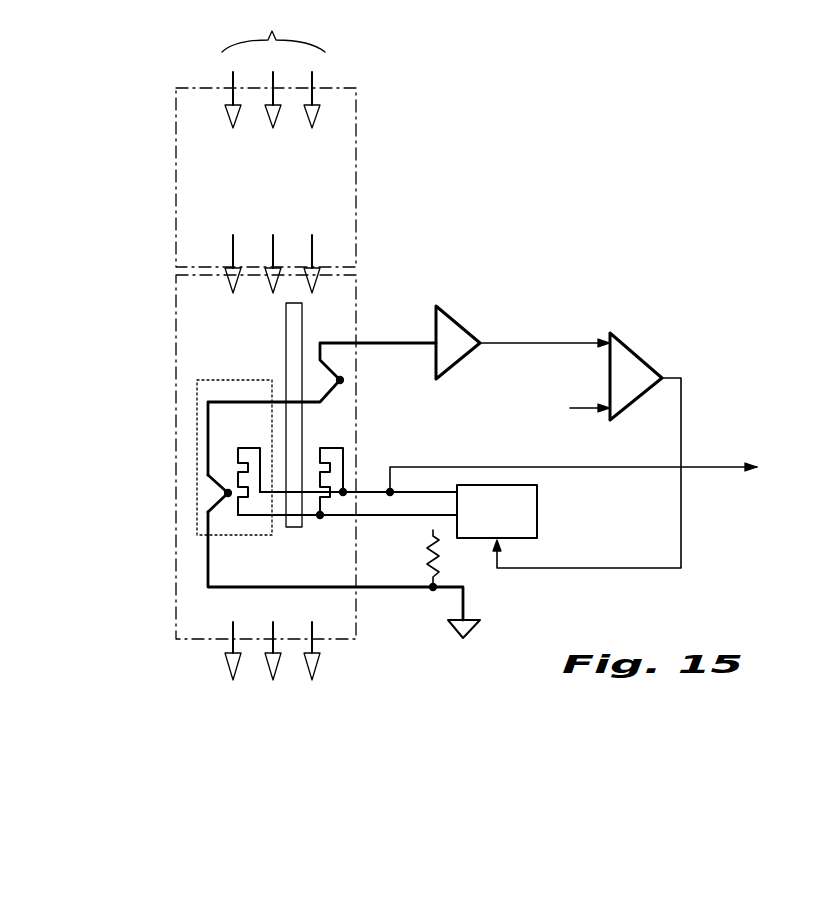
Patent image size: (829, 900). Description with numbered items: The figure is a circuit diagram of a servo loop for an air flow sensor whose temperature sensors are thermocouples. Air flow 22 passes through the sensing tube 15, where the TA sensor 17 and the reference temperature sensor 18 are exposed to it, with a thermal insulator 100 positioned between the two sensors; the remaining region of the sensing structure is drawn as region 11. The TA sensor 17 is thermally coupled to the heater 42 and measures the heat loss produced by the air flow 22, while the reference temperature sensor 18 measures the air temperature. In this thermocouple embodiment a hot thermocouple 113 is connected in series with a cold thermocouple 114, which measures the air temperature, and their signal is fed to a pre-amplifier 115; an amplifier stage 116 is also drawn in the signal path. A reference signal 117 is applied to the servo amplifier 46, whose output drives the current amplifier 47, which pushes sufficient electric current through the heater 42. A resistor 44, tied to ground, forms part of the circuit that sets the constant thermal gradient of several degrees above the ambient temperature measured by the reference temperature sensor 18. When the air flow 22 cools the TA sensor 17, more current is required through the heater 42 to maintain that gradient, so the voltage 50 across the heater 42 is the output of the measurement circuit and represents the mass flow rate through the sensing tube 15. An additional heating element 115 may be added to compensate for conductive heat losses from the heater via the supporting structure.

The air flow 22 is at (273, 64).
The sensing tube 15 is at (198, 142).
The reference temperature sensor 18 is at (355, 300).
The substrate 11 is at (185, 618).
The thermal insulator 100 is at (290, 355).
The TA sensor 17 is at (223, 535).
The cold thermocouple 114 is at (350, 375).
The hot thermocouple 113 is at (229, 493).
The heater 42 is at (238, 452).
The pre-amplifier 115 is at (327, 457).
The current amplifier 47 is at (530, 503).
The output voltage 50 is at (593, 471).
The resistor 44 is at (423, 558).
The amplifier 116 is at (450, 328).
The servo amplifier 46 is at (628, 383).
The reference signal 117 is at (570, 406).